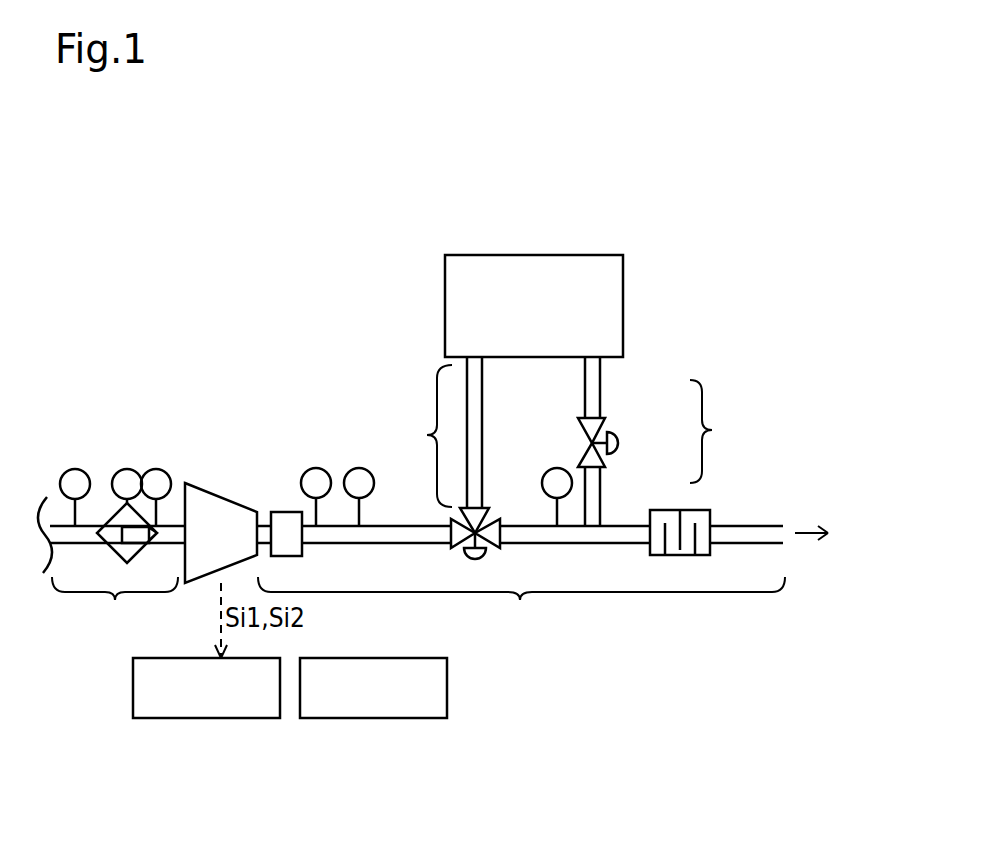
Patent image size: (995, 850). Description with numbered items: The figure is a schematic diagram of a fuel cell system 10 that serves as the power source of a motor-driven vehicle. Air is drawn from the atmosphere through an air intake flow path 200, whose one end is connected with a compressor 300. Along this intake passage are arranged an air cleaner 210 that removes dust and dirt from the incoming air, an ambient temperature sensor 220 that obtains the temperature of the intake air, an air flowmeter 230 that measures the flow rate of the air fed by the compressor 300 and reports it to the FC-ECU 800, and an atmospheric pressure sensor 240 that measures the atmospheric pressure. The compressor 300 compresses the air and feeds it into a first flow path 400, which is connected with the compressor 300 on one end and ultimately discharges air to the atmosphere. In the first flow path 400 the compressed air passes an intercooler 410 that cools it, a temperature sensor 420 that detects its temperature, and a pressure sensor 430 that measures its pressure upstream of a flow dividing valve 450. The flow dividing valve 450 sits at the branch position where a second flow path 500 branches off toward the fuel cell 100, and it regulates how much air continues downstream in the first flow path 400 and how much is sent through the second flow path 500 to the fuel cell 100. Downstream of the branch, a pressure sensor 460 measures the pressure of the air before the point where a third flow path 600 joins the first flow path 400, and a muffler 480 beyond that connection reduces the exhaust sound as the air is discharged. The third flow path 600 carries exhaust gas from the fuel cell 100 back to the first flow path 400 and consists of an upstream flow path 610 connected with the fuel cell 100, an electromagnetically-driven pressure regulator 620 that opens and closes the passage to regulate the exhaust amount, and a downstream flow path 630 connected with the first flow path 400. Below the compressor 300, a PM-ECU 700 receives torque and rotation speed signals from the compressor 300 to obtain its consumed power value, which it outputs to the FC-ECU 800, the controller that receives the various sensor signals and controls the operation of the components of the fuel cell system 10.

The fuel cell system 10 is at (293, 240).
The fuel cell 100 is at (607, 255).
The air intake flow path 200 is at (125, 503).
The air cleaner 210 is at (110, 517).
The ambient temperature sensor 220 is at (127, 468).
The air flowmeter 230 is at (161, 468).
The atmospheric pressure sensor 240 is at (75, 468).
The compressor 300 is at (223, 498).
The first flow path 400 is at (517, 524).
The intercooler 410 is at (288, 512).
The temperature sensor 420 is at (316, 467).
The pressure sensor 430 is at (359, 467).
The flow dividing valve 450 is at (493, 512).
The pressure sensor 460 is at (557, 467).
The muffler 480 is at (703, 510).
The second flow path 500 is at (432, 432).
The third flow path 600 is at (669, 441).
The upstream flow path 610 is at (600, 388).
The pressure regulator 620 is at (606, 424).
The downstream flow path 630 is at (600, 505).
The PM-ECU 700 is at (263, 718).
The FC-ECU 800 is at (430, 718).